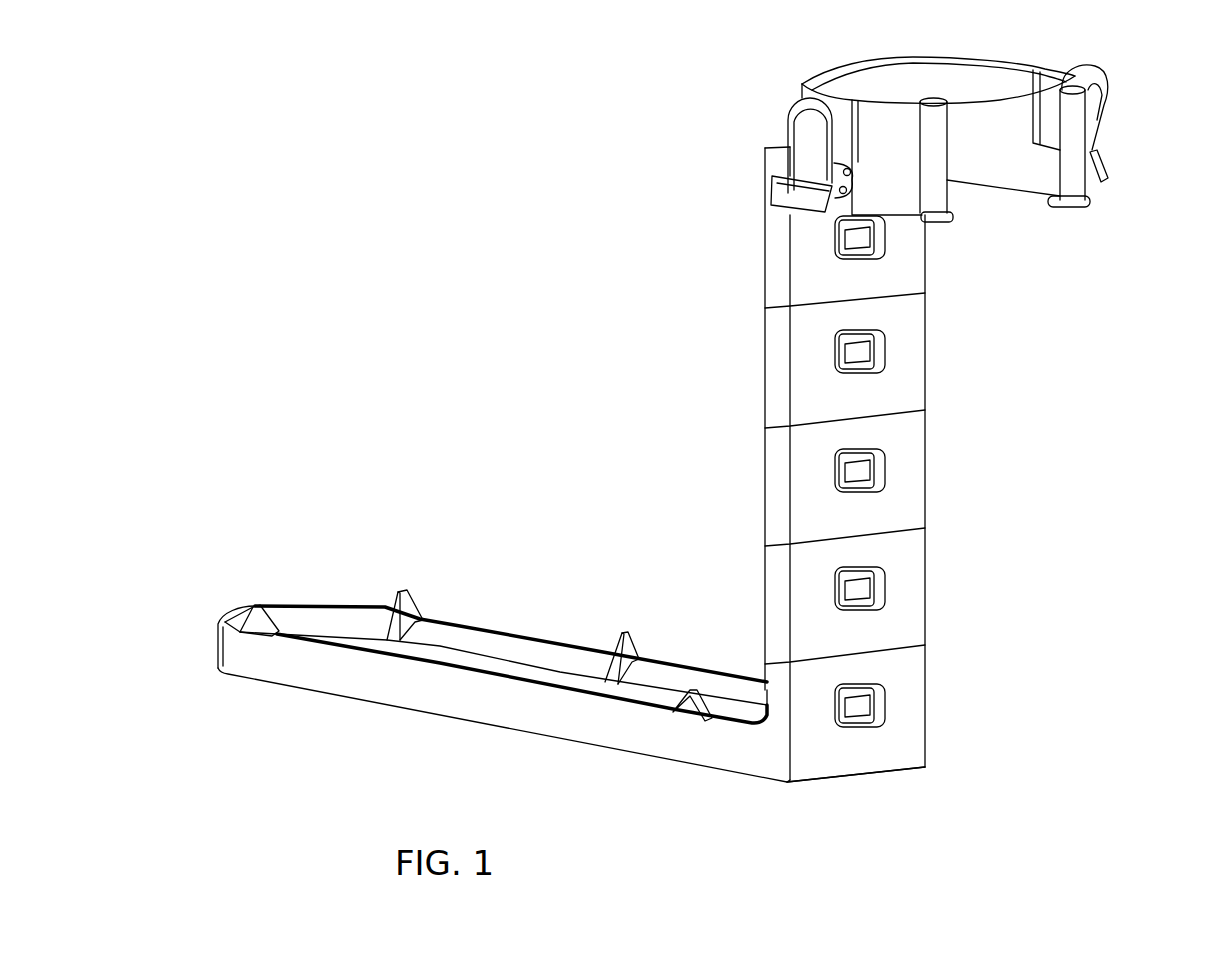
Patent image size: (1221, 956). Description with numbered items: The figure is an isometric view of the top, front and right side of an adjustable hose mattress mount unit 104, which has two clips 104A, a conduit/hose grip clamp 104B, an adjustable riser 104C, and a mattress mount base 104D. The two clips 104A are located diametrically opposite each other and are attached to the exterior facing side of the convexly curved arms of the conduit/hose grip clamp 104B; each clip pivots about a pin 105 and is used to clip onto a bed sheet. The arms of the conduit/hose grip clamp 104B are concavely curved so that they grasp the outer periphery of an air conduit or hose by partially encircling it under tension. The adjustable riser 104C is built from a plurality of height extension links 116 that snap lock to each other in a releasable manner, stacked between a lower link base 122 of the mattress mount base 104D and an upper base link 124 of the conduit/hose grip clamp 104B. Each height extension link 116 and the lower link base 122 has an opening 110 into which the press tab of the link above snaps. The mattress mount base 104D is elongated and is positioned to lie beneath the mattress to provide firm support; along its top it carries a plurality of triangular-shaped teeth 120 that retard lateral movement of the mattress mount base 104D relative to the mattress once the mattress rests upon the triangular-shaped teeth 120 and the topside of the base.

The adjustable hose mattress mount unit 104 is at (358, 300).
The clip 104A is at (798, 118).
The conduit/hose grip clamp 104B is at (903, 195).
The adjustable riser 104C is at (748, 672).
The mattress mount base 104D is at (793, 788).
The hinge pin 105 is at (922, 100).
The opening 110 is at (858, 352).
The height extension link 116 is at (917, 272).
The triangular-shaped teeth 120 is at (400, 588).
The lower link base 122 is at (920, 741).
The upper base link 124 is at (770, 162).